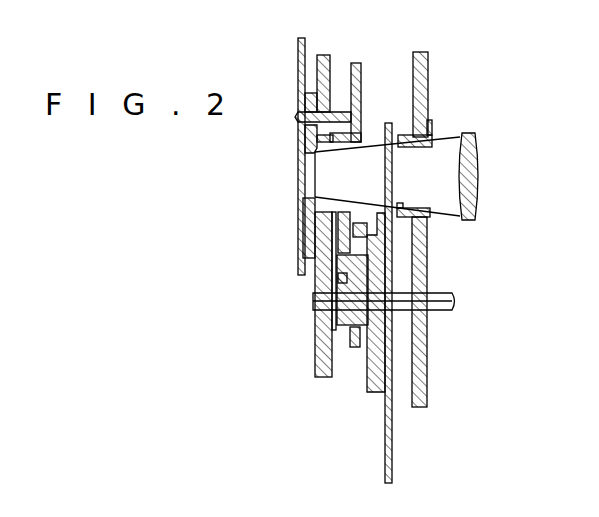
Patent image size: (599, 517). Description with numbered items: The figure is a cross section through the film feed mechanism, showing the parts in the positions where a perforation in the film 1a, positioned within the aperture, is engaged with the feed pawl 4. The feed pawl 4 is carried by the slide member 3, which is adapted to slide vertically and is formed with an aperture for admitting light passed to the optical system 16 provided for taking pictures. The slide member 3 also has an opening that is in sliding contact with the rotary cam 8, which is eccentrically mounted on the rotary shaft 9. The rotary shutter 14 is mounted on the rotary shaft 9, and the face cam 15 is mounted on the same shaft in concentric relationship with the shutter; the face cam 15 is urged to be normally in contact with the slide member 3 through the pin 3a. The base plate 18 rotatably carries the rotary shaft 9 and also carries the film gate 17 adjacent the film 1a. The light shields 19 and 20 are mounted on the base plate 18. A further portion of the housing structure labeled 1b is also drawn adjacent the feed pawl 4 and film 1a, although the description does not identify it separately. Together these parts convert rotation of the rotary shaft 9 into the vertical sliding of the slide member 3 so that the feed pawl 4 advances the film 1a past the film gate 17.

The film 1a is at (302, 70).
The housing block 1b is at (300, 125).
The film feed pawl 4 is at (297, 116).
The light shield 20 is at (374, 133).
The light shield 19 is at (403, 137).
The rotary shutter 14 is at (387, 427).
The face cam 15 is at (368, 370).
The film gate 17 is at (300, 218).
The slide member 3 is at (350, 222).
The pin 3a is at (372, 232).
The optical system 16 is at (478, 180).
The base plate 18 is at (317, 340).
The rotary cam 8 is at (337, 300).
The rotary shaft 9 is at (458, 300).